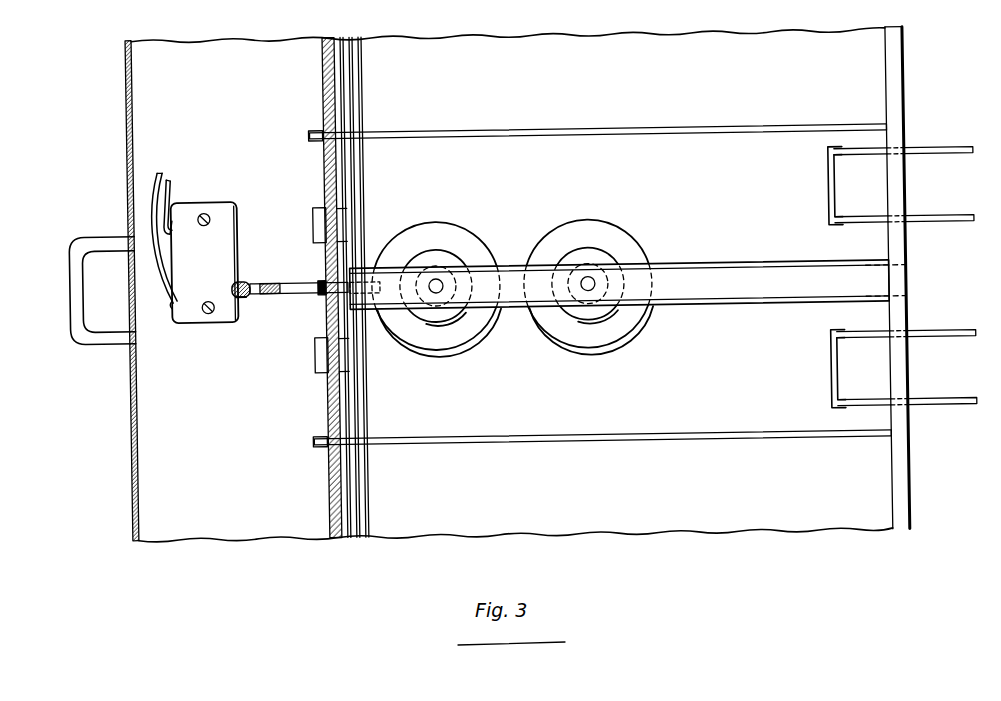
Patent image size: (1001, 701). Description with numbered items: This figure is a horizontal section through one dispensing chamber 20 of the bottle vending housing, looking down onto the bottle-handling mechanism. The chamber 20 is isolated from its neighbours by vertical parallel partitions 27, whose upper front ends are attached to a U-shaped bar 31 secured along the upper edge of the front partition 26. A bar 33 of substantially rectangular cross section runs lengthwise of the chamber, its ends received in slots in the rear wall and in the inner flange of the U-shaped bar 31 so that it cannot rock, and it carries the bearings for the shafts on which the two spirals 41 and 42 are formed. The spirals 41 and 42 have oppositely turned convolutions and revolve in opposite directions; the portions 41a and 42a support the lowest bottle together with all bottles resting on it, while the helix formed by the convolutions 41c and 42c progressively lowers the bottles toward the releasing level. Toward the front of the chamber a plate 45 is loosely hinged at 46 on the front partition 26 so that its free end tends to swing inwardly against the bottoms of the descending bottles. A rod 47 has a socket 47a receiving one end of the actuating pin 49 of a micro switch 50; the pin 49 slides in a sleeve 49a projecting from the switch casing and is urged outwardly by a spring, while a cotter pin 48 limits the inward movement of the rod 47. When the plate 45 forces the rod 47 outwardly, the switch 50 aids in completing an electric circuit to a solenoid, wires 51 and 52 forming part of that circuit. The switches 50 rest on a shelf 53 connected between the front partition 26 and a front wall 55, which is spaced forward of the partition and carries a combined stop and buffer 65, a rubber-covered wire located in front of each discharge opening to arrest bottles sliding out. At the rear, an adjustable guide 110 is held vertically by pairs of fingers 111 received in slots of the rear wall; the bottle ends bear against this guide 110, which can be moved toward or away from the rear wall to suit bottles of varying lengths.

The dispensing chamber 20 is at (520, 285).
The front partition 26 is at (333, 480).
The vertical parallel partition 27 is at (562, 137).
The U-shaped bar 31 is at (368, 490).
The bar 33 is at (727, 268).
The spiral 41 is at (410, 229).
The portion of spiral 41a is at (441, 251).
The convolutions of spiral 41c is at (488, 234).
The spiral 42 is at (593, 224).
The portion of spiral 42a is at (604, 249).
The convolutions of spiral 42c is at (653, 237).
The plate 45 is at (358, 361).
The hinge 46 is at (312, 213).
The rod 47 is at (292, 296).
The socket 47a is at (267, 294).
The cotter pin 48 is at (321, 283).
The actuating pin 49 is at (250, 284).
The sleeve 49a is at (248, 299).
The micro switch 50 is at (217, 262).
The wire 51 is at (158, 172).
The wire 52 is at (171, 180).
The shelf 53 is at (222, 395).
The front wall 55 is at (125, 158).
The combined stop and buffer 65 is at (72, 280).
The adjustable guide 110 is at (827, 188).
The finger 111 is at (937, 154).